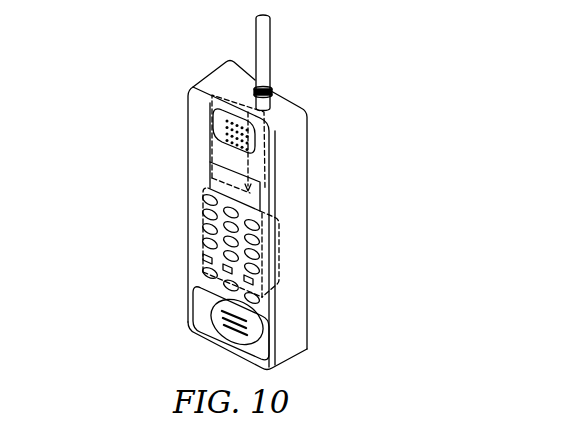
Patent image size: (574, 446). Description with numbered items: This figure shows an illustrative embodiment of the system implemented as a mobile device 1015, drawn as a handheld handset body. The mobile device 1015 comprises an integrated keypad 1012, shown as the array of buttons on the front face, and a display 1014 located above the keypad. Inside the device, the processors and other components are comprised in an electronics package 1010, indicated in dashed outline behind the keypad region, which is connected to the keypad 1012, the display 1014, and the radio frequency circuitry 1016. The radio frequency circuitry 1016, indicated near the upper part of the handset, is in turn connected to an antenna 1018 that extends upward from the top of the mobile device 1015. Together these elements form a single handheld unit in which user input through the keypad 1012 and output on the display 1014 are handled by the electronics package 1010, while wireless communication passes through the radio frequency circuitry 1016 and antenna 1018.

The electronics package 1010 is at (284, 248).
The keypad 1012 is at (215, 236).
The display 1014 is at (208, 180).
The mobile device 1015 is at (299, 321).
The radio frequency circuitry 1016 is at (213, 148).
The antenna 1018 is at (272, 45).